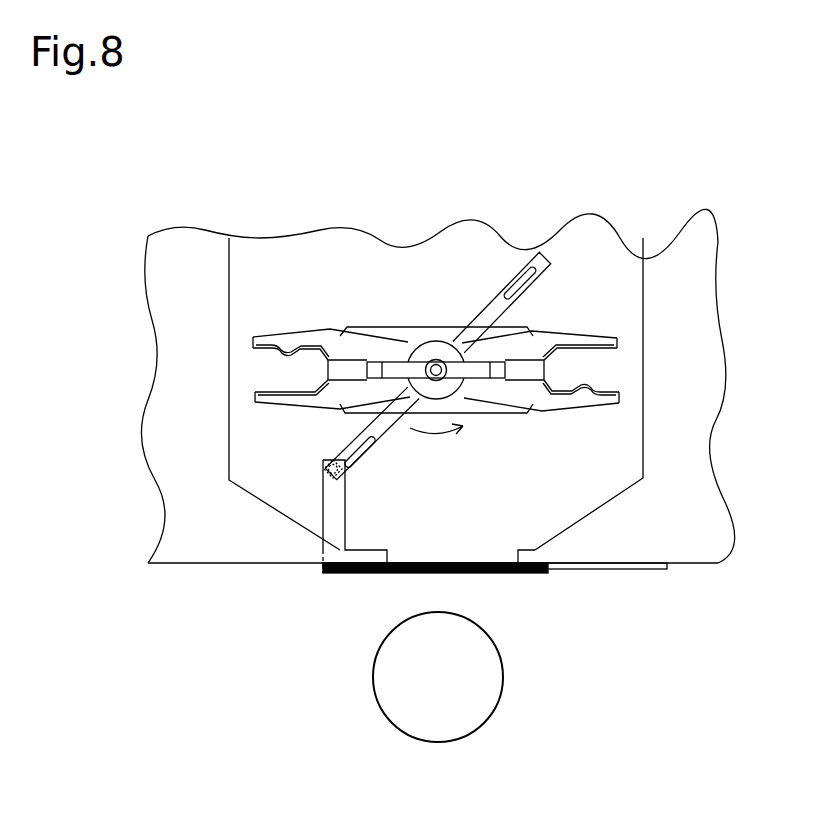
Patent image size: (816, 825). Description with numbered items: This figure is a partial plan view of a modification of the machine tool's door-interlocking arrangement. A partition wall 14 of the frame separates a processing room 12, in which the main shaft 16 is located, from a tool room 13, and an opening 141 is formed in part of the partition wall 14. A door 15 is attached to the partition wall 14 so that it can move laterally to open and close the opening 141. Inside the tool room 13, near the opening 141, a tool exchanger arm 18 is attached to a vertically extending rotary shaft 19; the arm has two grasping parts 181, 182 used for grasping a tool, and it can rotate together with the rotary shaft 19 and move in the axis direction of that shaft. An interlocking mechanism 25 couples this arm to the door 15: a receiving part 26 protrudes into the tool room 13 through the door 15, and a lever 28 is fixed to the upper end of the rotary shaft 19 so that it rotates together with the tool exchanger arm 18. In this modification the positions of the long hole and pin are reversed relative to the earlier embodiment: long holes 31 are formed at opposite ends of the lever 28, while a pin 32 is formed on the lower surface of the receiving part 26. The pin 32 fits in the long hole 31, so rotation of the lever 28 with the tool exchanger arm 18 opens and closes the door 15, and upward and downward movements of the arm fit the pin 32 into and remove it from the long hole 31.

The processing room 12 is at (495, 592).
The tool room 13 is at (437, 386).
The partition wall 14 is at (258, 565).
The opening 141 is at (516, 553).
The door 15 is at (374, 574).
The main shaft 16 is at (376, 652).
The tool exchanger arm 18 is at (444, 351).
The grasping part 181 is at (273, 352).
The grasping part 182 is at (612, 352).
The rotary shaft 19 is at (433, 359).
The interlocking mechanism 25 is at (435, 367).
The receiving part 26 is at (323, 489).
The lever 28 is at (517, 272).
The long hole 31 is at (530, 275).
The pin 32 is at (326, 470).